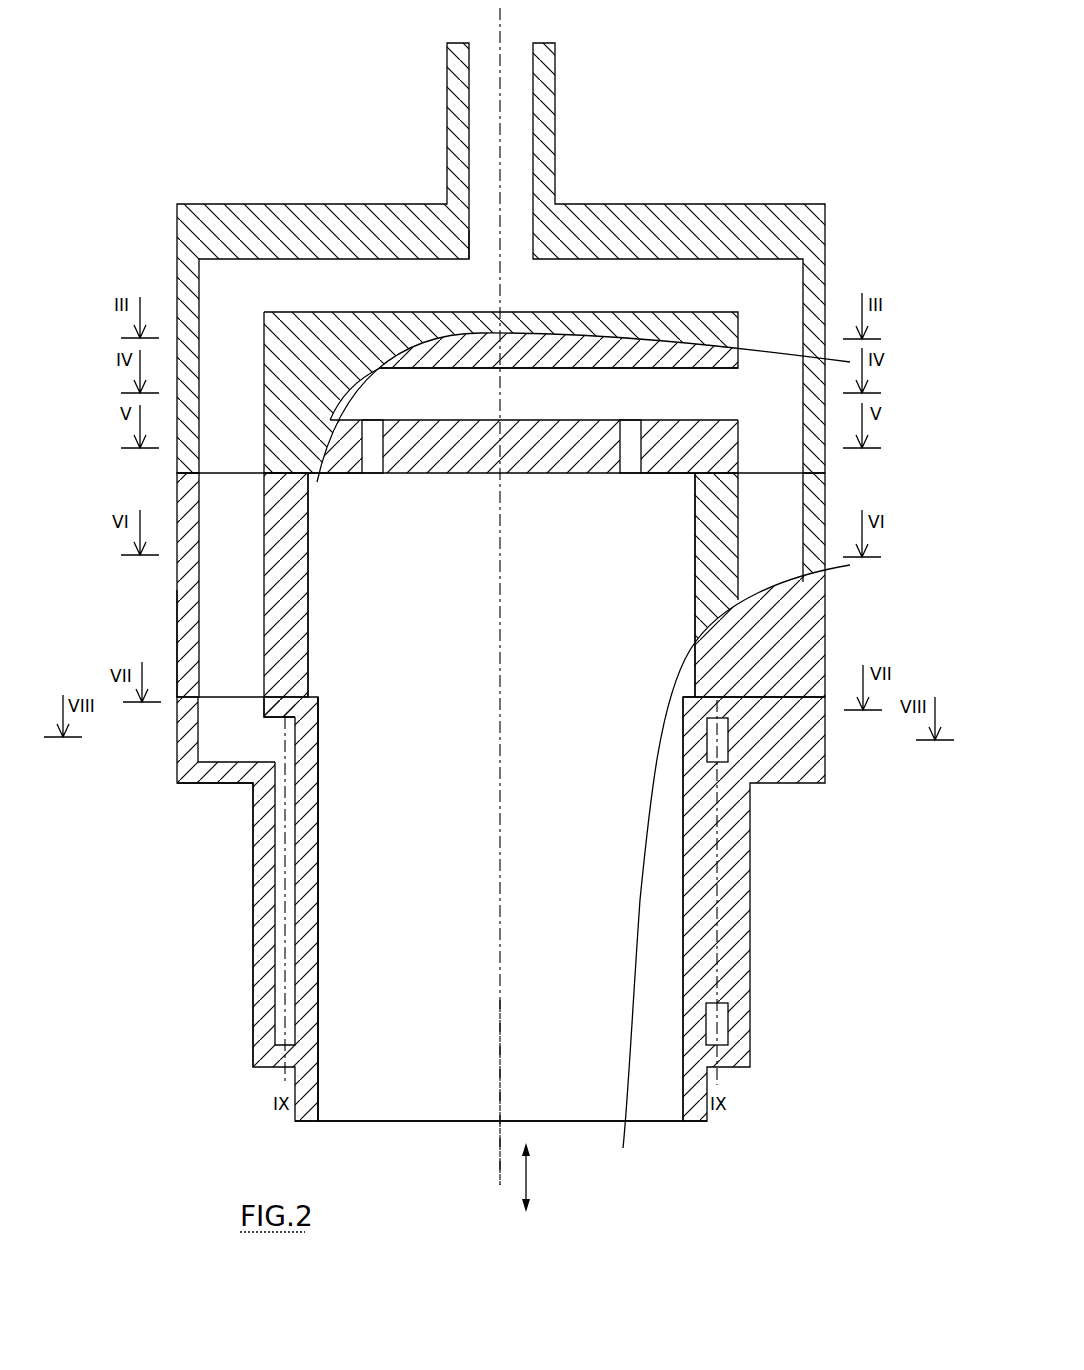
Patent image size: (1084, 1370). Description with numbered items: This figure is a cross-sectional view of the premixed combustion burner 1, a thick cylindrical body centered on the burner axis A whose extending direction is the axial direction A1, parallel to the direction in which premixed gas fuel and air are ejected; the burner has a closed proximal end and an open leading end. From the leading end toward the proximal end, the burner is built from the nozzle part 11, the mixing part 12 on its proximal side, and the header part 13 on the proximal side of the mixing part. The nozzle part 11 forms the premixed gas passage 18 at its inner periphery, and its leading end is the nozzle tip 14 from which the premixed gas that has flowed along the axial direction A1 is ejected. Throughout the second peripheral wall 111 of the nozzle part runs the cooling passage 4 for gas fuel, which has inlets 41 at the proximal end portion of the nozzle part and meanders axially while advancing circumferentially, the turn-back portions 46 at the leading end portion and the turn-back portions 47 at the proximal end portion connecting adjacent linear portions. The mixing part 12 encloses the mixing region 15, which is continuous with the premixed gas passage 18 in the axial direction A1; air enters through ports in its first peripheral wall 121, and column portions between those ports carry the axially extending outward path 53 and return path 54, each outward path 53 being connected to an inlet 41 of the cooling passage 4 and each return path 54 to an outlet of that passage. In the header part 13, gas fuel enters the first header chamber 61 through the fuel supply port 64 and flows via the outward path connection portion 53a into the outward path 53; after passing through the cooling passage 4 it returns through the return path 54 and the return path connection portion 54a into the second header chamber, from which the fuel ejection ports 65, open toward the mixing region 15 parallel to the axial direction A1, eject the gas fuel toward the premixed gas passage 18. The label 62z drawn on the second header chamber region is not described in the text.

The premixed combustion burner 1 is at (757, 165).
The header part 13 is at (177, 228).
The fuel supply port 64 is at (468, 262).
The first header chamber 61 is at (384, 301).
The slot 62z is at (462, 409).
The outward path connection portion 53a is at (254, 403).
The return path connection portion 54a is at (794, 447).
The fuel ejection port 65 is at (376, 475).
The mixing part 12 is at (177, 568).
The first peripheral wall 121 is at (177, 603).
The outward path 53 is at (242, 599).
The return path 54 is at (784, 533).
The mixing region 15 is at (568, 603).
The premixed gas passage 18 is at (566, 893).
The nozzle part 11 is at (253, 850).
The inlet 41 is at (215, 742).
The cooling passage 4 is at (272, 978).
The second peripheral wall 111 is at (253, 946).
The nozzle tip 14 is at (318, 1121).
The turn-back portion 47 is at (728, 742).
The turn-back portion 46 is at (732, 1022).
The burner axis A is at (500, 1178).
The axial direction A1 is at (528, 1186).